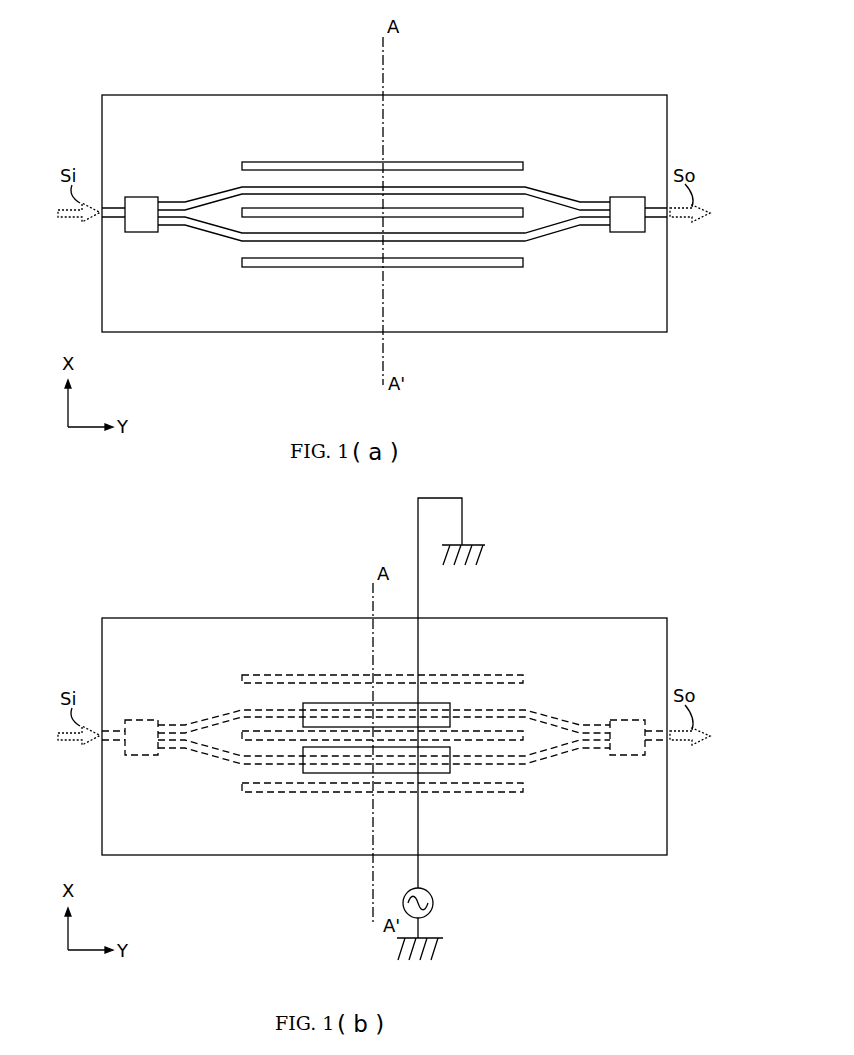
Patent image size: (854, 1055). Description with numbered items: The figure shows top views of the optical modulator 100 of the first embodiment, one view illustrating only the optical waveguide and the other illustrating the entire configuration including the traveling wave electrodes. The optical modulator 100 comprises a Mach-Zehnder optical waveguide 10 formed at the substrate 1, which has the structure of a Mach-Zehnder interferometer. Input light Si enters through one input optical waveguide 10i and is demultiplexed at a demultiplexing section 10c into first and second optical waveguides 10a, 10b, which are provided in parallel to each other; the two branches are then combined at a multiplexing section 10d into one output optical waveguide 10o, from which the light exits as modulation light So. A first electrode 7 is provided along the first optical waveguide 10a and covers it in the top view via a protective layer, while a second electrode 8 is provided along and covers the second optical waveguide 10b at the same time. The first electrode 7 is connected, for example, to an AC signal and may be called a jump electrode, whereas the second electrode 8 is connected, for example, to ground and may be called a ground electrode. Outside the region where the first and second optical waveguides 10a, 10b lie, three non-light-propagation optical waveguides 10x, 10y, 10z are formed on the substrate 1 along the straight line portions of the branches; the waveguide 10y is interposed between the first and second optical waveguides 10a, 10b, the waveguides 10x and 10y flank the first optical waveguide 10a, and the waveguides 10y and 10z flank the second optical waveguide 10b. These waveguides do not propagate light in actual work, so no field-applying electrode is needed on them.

In FIG. 1a, the optical modulator 100 is at (543, 37).
In FIG. 1b, the optical modulator 100 is at (545, 562).
In FIG. 1a, the substrate 1 is at (104, 95).
In FIG. 1b, the substrate 1 is at (104, 618).
In FIG. 1a, the Mach-Zehnder optical waveguide 10 is at (467, 187).
In FIG. 1b, the Mach-Zehnder optical waveguide 10 is at (468, 710).
In FIG. 1a, the input optical waveguide 10i is at (118, 217).
In FIG. 1b, the input optical waveguide 10i is at (118, 740).
In FIG. 1a, the output optical waveguide 10o is at (658, 217).
In FIG. 1b, the output optical waveguide 10o is at (658, 740).
In FIG. 1a, the demultiplexing section 10c is at (140, 197).
In FIG. 1b, the demultiplexing section 10c is at (140, 720).
In FIG. 1a, the multiplexing section 10d is at (627, 197).
In FIG. 1b, the multiplexing section 10d is at (627, 720).
In FIG. 1a, the first optical waveguide 10a is at (282, 242).
In FIG. 1b, the first optical waveguide 10a is at (282, 765).
In FIG. 1a, the second optical waveguide 10b is at (283, 187).
In FIG. 1b, the second optical waveguide 10b is at (287, 707).
In FIG. 1a, the non-light-propagation optical waveguide 10x is at (412, 267).
In FIG. 1b, the non-light-propagation optical waveguide 10x is at (430, 792).
In FIG. 1a, the non-light-propagation optical waveguide 10y is at (417, 210).
In FIG. 1b, the non-light-propagation optical waveguide 10y is at (508, 733).
In FIG. 1a, the non-light-propagation optical waveguide 10z is at (328, 163).
In FIG. 1b, the non-light-propagation optical waveguide 10z is at (303, 675).
In FIG. 1b, the first electrode 7 is at (353, 773).
In FIG. 1b, the second electrode 8 is at (343, 702).